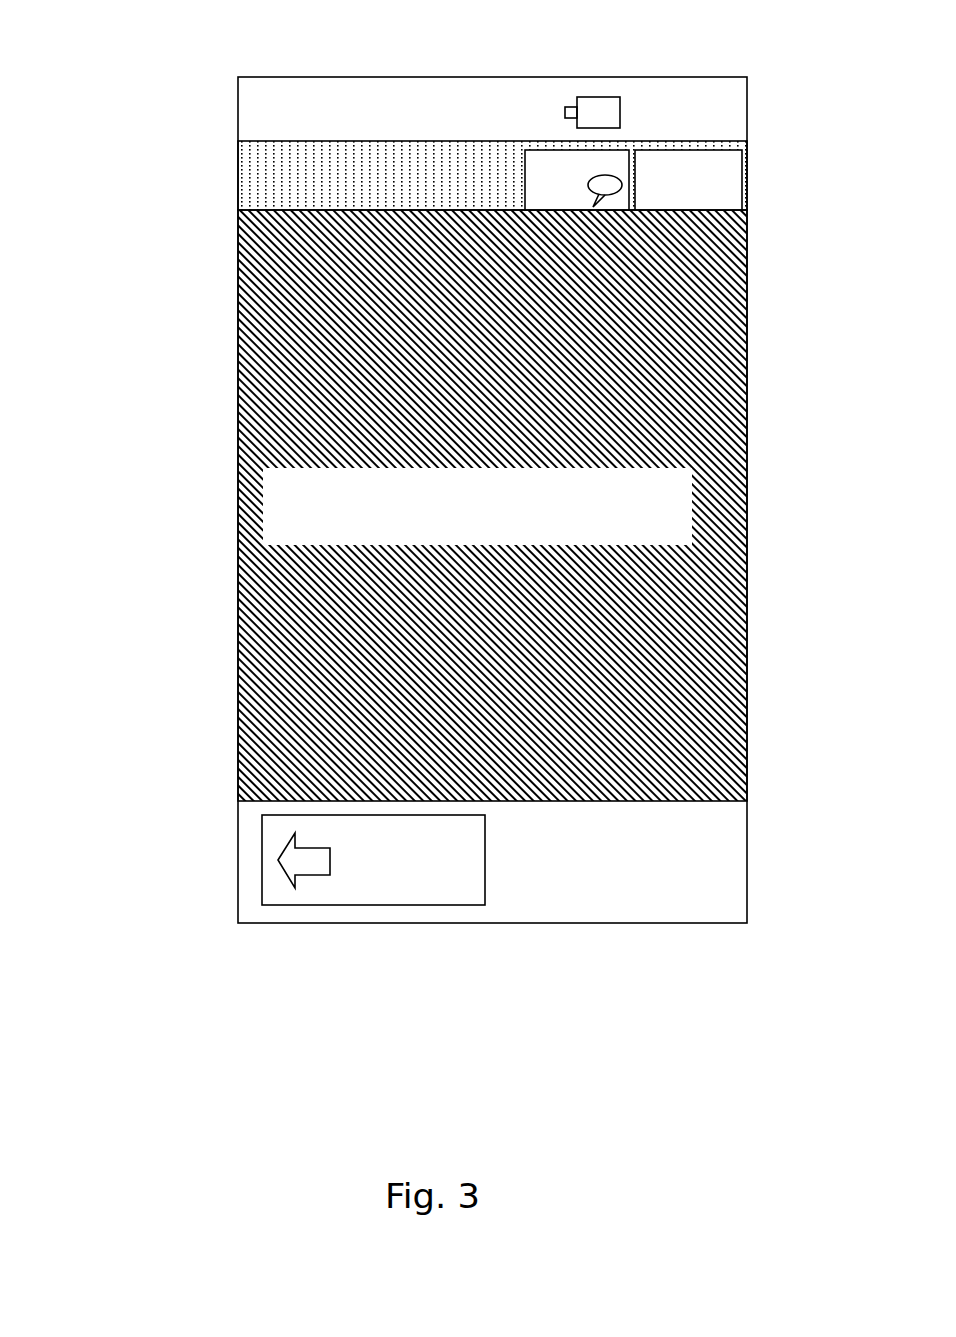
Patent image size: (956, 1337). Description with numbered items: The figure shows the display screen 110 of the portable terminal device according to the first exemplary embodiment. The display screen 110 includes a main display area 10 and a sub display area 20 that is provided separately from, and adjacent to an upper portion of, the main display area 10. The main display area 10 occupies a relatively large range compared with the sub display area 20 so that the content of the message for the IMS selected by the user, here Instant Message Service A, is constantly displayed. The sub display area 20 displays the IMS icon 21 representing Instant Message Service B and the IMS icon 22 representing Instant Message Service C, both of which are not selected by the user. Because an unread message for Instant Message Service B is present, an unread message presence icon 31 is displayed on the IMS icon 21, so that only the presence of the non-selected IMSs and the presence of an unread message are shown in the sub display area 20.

The display screen 110 is at (130, 116).
The main display area 10 is at (240, 410).
The sub display area 20 is at (245, 178).
The IMS icon 21 is at (540, 187).
The IMS icon 22 is at (731, 187).
The unread message presence icon 31 is at (612, 177).